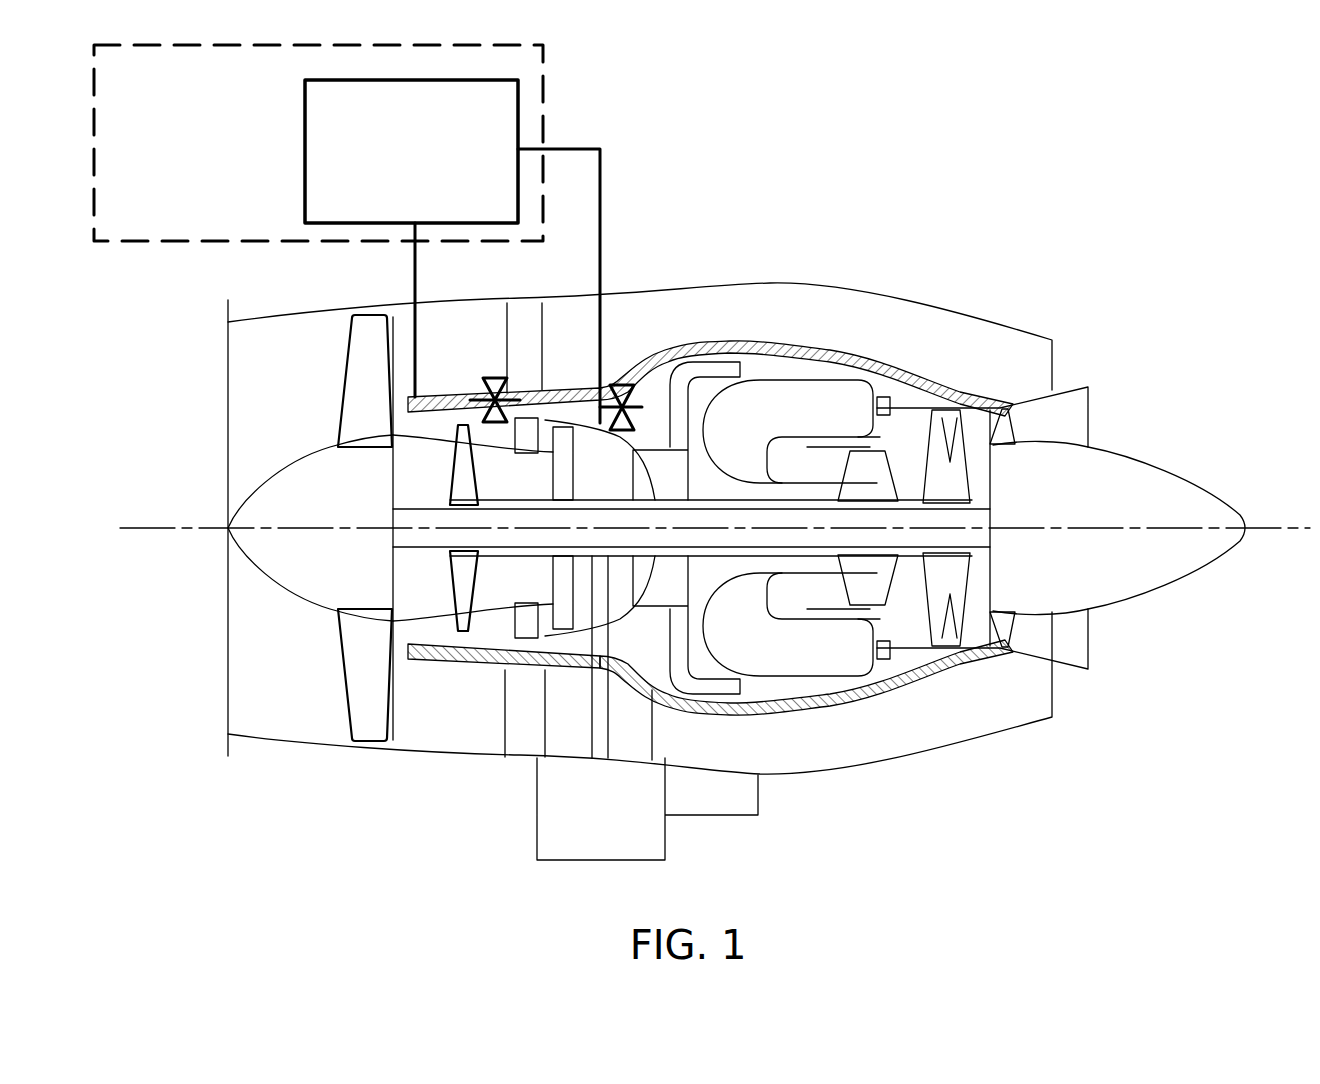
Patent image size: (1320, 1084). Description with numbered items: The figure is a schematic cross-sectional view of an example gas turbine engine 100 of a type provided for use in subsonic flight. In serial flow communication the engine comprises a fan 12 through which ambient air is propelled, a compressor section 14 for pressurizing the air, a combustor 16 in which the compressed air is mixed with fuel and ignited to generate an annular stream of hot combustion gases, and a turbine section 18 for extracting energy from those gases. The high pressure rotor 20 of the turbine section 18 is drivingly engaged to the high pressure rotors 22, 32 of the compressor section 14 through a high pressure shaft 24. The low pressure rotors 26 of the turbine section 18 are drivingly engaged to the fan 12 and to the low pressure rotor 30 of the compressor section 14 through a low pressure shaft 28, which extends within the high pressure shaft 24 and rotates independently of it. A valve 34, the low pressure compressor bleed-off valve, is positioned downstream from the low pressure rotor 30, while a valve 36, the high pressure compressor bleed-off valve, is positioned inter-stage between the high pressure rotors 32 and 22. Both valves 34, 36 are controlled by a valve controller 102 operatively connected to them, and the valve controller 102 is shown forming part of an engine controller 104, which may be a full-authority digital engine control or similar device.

The gas turbine engine 100 is at (930, 220).
The valve controller 102 is at (411, 151).
The engine controller 104 is at (318, 143).
The fan 12 is at (363, 667).
The compressor section 14 is at (592, 383).
The combustor 16 is at (790, 400).
The turbine section 18 is at (918, 683).
The high pressure rotor 20 is at (890, 440).
The high pressure rotor 22 is at (657, 413).
The high pressure shaft 24 is at (800, 460).
The low pressure rotor 26 is at (945, 420).
The low pressure shaft 28 is at (450, 650).
The low pressure rotor 30 is at (465, 477).
The high pressure rotor 32 is at (560, 452).
The valve 34 is at (492, 378).
The valve 36 is at (618, 387).